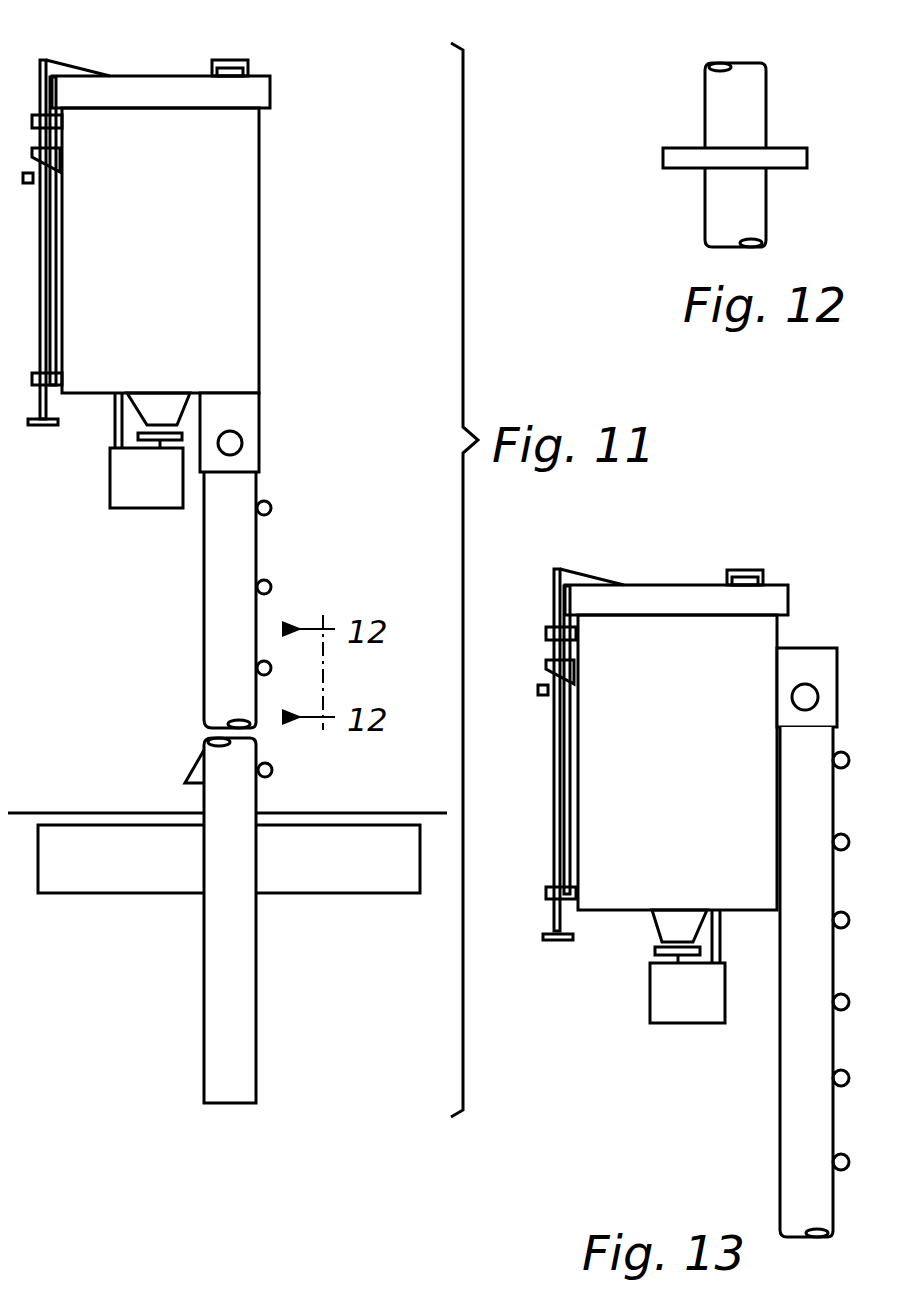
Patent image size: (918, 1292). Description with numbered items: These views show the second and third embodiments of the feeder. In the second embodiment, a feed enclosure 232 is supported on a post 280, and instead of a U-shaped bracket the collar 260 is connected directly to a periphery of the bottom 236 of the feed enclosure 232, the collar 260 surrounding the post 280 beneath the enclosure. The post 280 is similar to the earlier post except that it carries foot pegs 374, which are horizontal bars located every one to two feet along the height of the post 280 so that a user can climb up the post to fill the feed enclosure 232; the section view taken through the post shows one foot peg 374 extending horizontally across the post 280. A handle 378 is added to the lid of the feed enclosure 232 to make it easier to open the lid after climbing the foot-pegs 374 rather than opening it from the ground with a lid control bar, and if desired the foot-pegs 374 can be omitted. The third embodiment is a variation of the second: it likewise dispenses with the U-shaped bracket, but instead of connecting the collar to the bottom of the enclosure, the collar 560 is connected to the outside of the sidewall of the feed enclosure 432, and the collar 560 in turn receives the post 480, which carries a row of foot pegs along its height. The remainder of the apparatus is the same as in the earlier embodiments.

In FIG. 11, the feed enclosure 232 is at (268, 247).
In FIG. 11, the bottom of feed enclosure 236 is at (95, 393).
In FIG. 11, the collar 260 is at (268, 432).
In FIG. 11, the post 280 is at (204, 578).
In FIG. 12, the post 280 is at (766, 115).
In FIG. 11, the foot pegs 374 is at (272, 588).
In FIG. 12, the foot pegs 374 is at (790, 170).
In FIG. 11, the handle 378 is at (245, 60).
In FIG. 13, the feed enclosure 432 is at (786, 633).
In FIG. 13, the post 480 is at (780, 1120).
In FIG. 13, the collar 560 is at (820, 648).